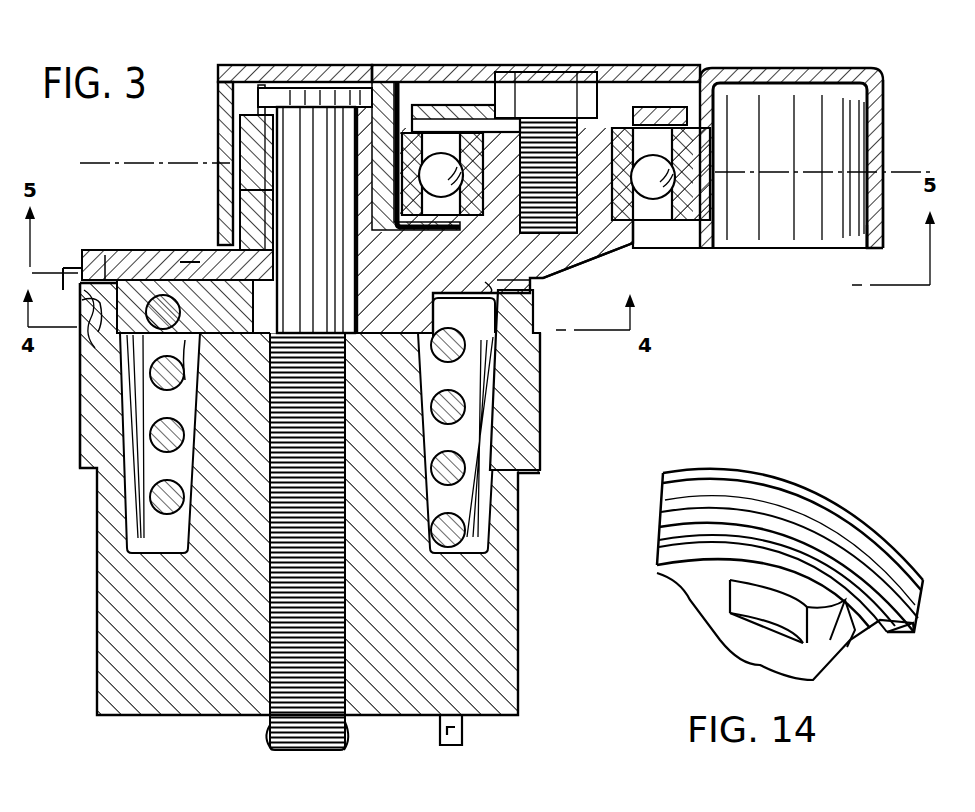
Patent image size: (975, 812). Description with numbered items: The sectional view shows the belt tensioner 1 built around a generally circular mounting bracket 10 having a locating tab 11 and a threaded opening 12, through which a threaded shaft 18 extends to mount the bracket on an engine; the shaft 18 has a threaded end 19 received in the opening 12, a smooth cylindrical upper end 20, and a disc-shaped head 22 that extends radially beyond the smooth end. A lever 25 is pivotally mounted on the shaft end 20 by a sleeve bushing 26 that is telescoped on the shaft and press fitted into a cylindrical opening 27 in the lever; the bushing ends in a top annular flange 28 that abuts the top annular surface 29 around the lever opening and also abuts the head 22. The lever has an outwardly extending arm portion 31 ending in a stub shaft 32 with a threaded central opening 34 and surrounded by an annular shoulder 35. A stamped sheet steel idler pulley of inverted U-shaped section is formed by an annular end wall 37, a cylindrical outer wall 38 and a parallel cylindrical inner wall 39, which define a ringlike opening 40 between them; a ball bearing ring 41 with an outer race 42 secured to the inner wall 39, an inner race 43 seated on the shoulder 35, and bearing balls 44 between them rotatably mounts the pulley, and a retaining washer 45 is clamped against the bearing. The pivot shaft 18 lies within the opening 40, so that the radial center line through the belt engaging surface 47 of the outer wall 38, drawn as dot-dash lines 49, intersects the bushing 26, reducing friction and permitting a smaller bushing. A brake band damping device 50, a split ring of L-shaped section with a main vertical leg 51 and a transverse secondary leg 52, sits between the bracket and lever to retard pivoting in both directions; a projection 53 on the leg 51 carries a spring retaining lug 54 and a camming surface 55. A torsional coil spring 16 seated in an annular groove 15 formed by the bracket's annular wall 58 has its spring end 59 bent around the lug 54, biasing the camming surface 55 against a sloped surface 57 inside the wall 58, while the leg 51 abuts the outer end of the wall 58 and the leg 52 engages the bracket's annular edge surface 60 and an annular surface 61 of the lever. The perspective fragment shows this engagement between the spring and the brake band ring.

In FIG. 3, the tensioner 1 is at (415, 46).
In FIG. 3, the mounting bracket 10 is at (88, 628).
In FIG. 3, the locating tab 11 is at (463, 732).
In FIG. 3, the threaded opening 12 is at (270, 747).
In FIG. 3, the annular groove 15 is at (133, 500).
In FIG. 3, the torsional coil spring 16 is at (152, 442).
In FIG. 3, the threaded shaft 18 is at (347, 732).
In FIG. 3, the threaded end 19 is at (267, 730).
In FIG. 3, the smooth cylindrical upper end 20 is at (300, 148).
In FIG. 3, the disc-shaped head 22 is at (333, 76).
In FIG. 3, the lever 25 is at (565, 270).
In FIG. 3, the sleeve bushing 26 is at (245, 135).
In FIG. 3, the cylindrical opening 27 is at (256, 190).
In FIG. 3, the top annular flange 28 is at (226, 68).
In FIG. 3, the top annular surface 29 is at (257, 113).
In FIG. 3, the outwardly extending arm portion 31 is at (620, 245).
In FIG. 3, the stub shaft 32 is at (602, 64).
In FIG. 3, the threaded central opening 34 is at (528, 90).
In FIG. 3, the annular shoulder 35 is at (640, 215).
In FIG. 3, the annular end wall 37 is at (757, 67).
In FIG. 3, the cylindrical outer wall 38 is at (877, 187).
In FIG. 3, the cylindrical inner wall 39 is at (705, 215).
In FIG. 3, the ringlike opening 40 is at (858, 232).
In FIG. 3, the ball bearing ring 41 is at (682, 192).
In FIG. 3, the outer race 42 is at (690, 148).
In FIG. 3, the inner race 43 is at (628, 127).
In FIG. 3, the bearing balls 44 is at (440, 153).
In FIG. 3, the retaining washer 45 is at (478, 106).
In FIG. 3, the belt engaging surface 47 is at (877, 147).
In FIG. 3, the dot-dash lines 49 is at (115, 164).
In FIG. 3, the brake band damping device 50 is at (147, 267).
In FIG. 3, the main vertical leg 51 is at (541, 367).
In FIG. 14, the main vertical leg 51 is at (833, 533).
In FIG. 3, the transverse secondary leg 52 is at (63, 267).
In FIG. 14, the transverse secondary leg 52 is at (913, 627).
In FIG. 14, the projection 53 is at (847, 647).
In FIG. 3, the spring retaining lug 54 is at (213, 337).
In FIG. 14, the spring retaining lug 54 is at (733, 623).
In FIG. 3, the camming surface 55 is at (187, 377).
In FIG. 14, the camming surface 55 is at (730, 592).
In FIG. 3, the sloped surface 57 is at (83, 370).
In FIG. 3, the annular wall 58 is at (80, 402).
In FIG. 3, the spring end 59 is at (180, 267).
In FIG. 14, the spring end 59 is at (810, 670).
In FIG. 3, the annular edge surface 60 is at (98, 303).
In FIG. 3, the annular surface 61 is at (107, 267).